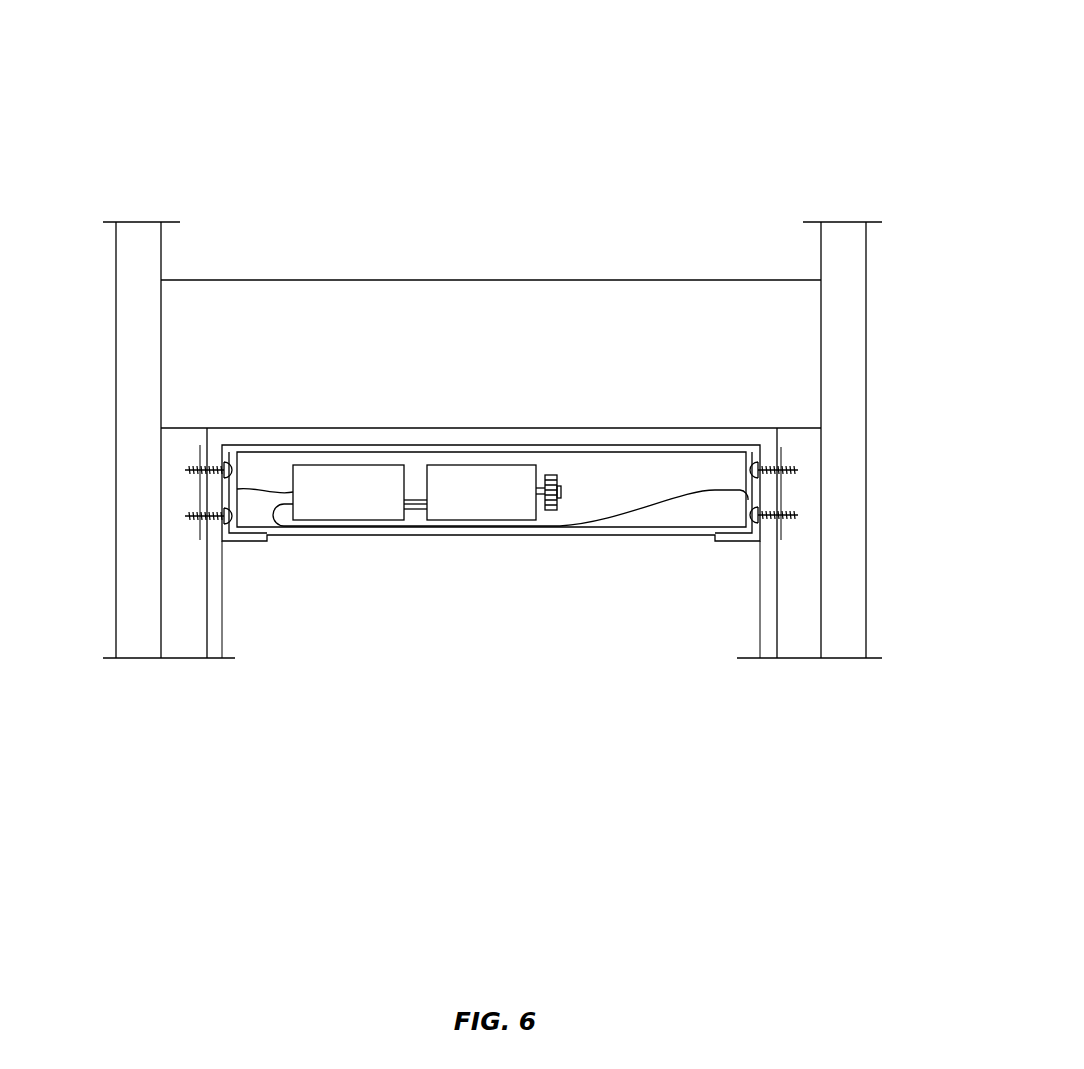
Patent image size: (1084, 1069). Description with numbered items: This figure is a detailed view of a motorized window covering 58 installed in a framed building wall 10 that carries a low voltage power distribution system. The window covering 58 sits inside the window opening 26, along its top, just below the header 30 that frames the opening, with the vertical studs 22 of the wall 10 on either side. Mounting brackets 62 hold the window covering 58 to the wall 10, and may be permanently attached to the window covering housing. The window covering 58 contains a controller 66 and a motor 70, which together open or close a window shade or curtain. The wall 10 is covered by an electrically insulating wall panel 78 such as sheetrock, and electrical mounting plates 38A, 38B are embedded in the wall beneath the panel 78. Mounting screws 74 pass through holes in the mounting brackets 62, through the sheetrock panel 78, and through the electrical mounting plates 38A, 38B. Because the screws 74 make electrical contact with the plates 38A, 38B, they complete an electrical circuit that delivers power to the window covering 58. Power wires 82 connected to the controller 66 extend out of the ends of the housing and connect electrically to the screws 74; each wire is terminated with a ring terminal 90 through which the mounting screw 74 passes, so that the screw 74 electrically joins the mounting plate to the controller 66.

The wall 10 is at (615, 224).
The stud 22 is at (180, 578).
The window opening 26 is at (354, 628).
The header 30 is at (677, 308).
The electrical mounting plate 38A is at (205, 483).
The electrical mounting plate 38B is at (778, 460).
The motorized window covering 58 is at (575, 508).
The mounting bracket 62 is at (248, 447).
The controller 66 is at (355, 493).
The motor 70 is at (492, 492).
The mounting screw 74 is at (215, 517).
The wall panel 78 is at (412, 440).
The power wire 82 is at (262, 485).
The ring terminal 90 is at (230, 520).